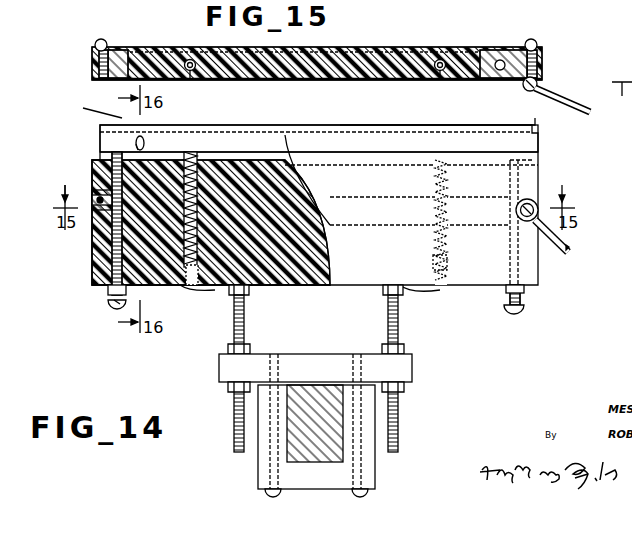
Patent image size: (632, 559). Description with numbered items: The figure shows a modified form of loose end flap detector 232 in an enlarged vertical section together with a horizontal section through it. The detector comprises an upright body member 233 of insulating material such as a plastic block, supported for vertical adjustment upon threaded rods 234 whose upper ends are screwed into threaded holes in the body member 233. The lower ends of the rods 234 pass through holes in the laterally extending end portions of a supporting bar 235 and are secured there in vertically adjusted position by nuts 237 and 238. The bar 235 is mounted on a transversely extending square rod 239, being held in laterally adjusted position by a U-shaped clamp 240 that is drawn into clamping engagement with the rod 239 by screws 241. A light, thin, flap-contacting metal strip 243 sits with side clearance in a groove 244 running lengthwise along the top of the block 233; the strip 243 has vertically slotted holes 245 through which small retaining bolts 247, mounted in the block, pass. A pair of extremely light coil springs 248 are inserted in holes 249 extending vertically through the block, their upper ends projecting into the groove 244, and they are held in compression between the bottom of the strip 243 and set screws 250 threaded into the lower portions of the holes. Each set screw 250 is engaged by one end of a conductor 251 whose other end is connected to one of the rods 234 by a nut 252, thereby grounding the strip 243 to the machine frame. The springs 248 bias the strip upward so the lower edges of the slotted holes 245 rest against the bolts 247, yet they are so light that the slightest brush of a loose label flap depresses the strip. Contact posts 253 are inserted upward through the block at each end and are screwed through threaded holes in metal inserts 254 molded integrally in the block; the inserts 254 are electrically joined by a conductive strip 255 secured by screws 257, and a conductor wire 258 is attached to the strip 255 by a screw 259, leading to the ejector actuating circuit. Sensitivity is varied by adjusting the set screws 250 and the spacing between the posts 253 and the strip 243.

In FIG. 15, the loose end flap detector 232 is at (383, 78).
In FIG. 14, the loose end flap detector 232 is at (90, 278).
In FIG. 15, the body member 233 is at (317, 70).
In FIG. 14, the body member 233 is at (385, 250).
In FIG. 14, the threaded rods 234 is at (386, 326).
In FIG. 14, the supporting bar 235 is at (335, 377).
In FIG. 14, the nuts 237 is at (228, 387).
In FIG. 14, the nuts 238 is at (228, 349).
In FIG. 14, the square rod 239 is at (308, 422).
In FIG. 14, the U-shaped clamp 240 is at (337, 482).
In FIG. 14, the screws 241 is at (358, 493).
In FIG. 14, the flap-contacting metal strip 243 is at (112, 141).
In FIG. 14, the groove 244 is at (275, 160).
In FIG. 14, the slotted holes 245 is at (138, 137).
In FIG. 14, the retaining bolts 247 is at (136, 145).
In FIG. 15, the coil springs 248 is at (193, 60).
In FIG. 14, the coil springs 248 is at (190, 160).
In FIG. 15, the holes 249 is at (188, 72).
In FIG. 14, the holes 249 is at (184, 165).
In FIG. 14, the set screws 250 is at (180, 285).
In FIG. 14, the conductor 251 is at (212, 290).
In FIG. 14, the nut 252 is at (385, 297).
In FIG. 14, the contact posts 253 is at (112, 159).
In FIG. 15, the metal inserts 254 is at (118, 64).
In FIG. 14, the metal inserts 254 is at (92, 225).
In FIG. 15, the connecting strip 255 is at (428, 48).
In FIG. 15, the screws 257 is at (104, 42).
In FIG. 14, the screws 257 is at (95, 205).
In FIG. 15, the conductor wire 258 is at (562, 104).
In FIG. 14, the conductor wire 258 is at (566, 252).
In FIG. 15, the screw 259 is at (530, 90).
In FIG. 14, the screw 259 is at (535, 200).